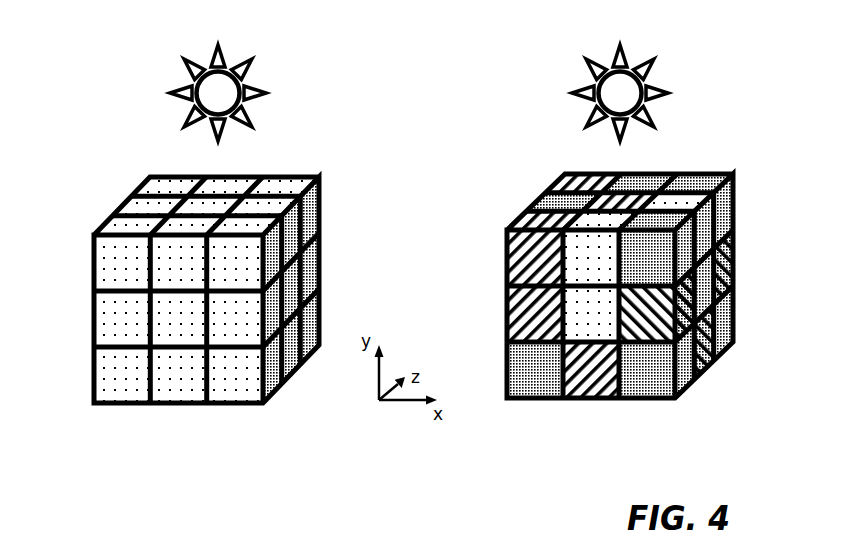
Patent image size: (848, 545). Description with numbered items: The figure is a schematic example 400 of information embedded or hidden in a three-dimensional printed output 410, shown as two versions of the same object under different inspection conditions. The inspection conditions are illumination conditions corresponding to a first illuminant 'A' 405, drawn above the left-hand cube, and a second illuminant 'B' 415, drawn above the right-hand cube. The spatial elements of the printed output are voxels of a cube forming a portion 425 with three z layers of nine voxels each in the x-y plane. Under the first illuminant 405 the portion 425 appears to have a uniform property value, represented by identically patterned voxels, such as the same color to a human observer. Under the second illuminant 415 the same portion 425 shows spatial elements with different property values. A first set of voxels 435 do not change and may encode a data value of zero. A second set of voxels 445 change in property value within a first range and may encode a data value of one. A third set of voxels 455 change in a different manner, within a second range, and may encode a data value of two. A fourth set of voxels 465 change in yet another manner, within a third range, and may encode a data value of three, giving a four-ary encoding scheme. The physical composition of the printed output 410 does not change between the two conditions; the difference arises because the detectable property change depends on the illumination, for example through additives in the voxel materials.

The example of information embedded in a three-dimensional printed output 400 is at (100, 30).
The first illuminant 'A' 405 is at (252, 70).
The second illuminant 'B' 415 is at (651, 70).
The printed output 410 is at (325, 192).
The portion of printed output 425 is at (113, 403).
The first set of voxels 435 is at (592, 320).
The second set of voxels 445 is at (527, 260).
The third set of voxels 455 is at (653, 373).
The fourth set of voxels 465 is at (692, 317).